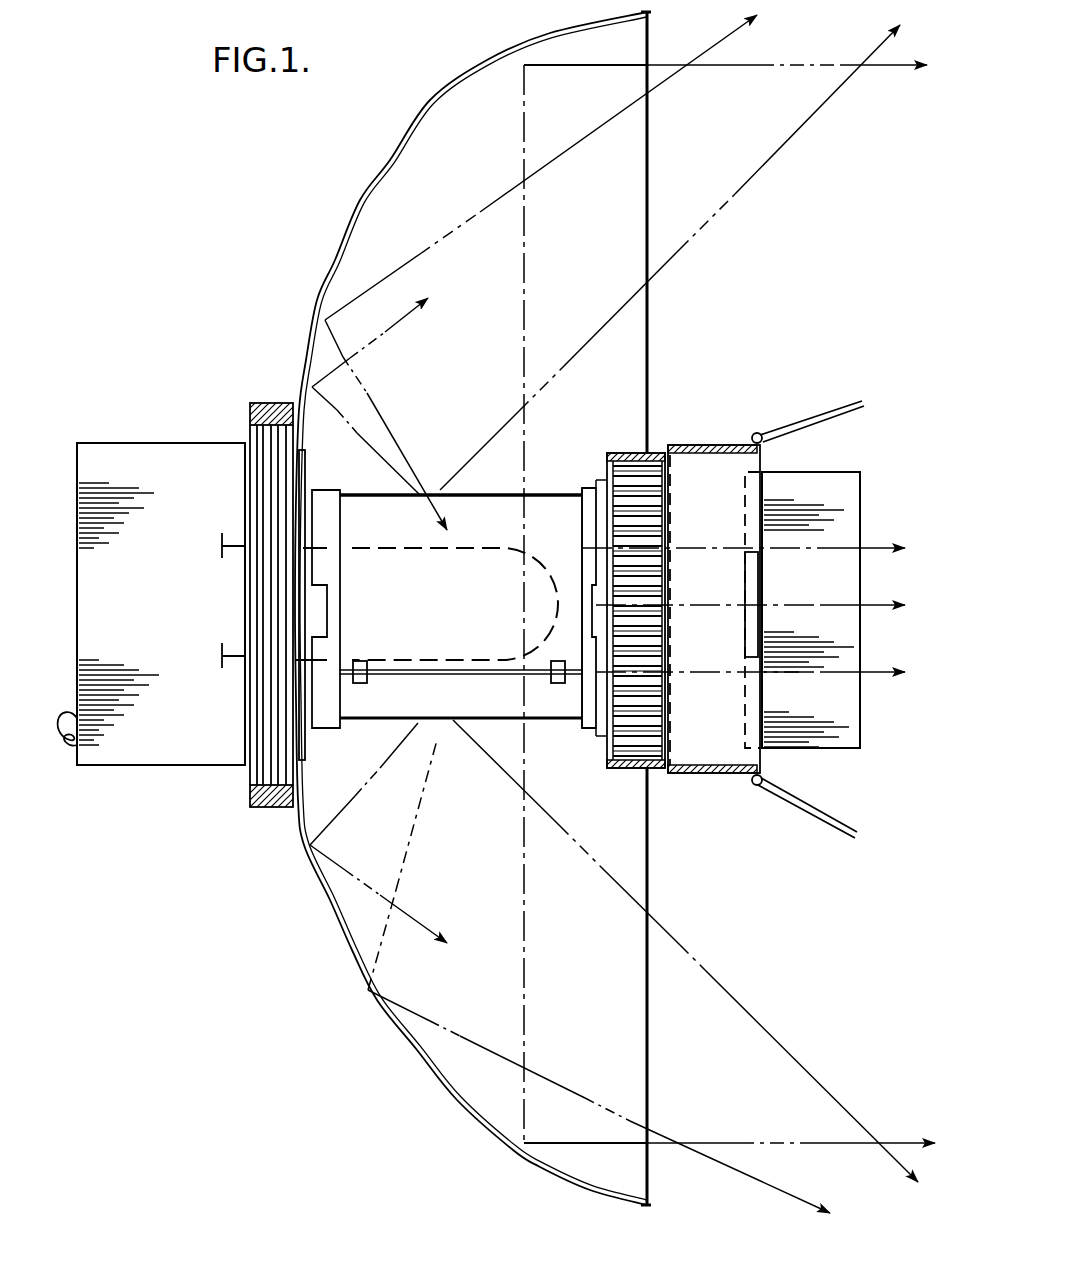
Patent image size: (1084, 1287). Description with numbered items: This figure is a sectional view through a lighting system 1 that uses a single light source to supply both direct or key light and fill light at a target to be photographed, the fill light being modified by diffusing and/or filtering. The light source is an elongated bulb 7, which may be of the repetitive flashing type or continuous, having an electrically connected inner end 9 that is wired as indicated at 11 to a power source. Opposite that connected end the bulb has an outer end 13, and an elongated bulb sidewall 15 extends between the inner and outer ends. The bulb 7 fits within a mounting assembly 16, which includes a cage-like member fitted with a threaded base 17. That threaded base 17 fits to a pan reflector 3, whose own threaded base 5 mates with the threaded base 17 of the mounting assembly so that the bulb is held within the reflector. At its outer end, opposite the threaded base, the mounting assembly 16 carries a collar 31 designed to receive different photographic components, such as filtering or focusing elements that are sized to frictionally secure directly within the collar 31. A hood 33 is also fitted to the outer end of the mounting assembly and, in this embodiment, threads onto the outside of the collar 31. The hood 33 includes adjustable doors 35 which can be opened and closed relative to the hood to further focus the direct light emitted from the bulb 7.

The lighting system 1 is at (334, 188).
The pan reflector 3 is at (486, 70).
The threaded base 5 is at (276, 405).
The elongated bulb 7 is at (486, 542).
The inner end 9 is at (238, 604).
The wiring 11 is at (66, 750).
The outer end 13 is at (562, 582).
The bulb sidewall 15 is at (402, 548).
The mounting assembly 16 is at (447, 740).
The threaded base 17 is at (264, 770).
The collar 31 is at (622, 448).
The hood 33 is at (714, 447).
The adjustable doors 35 is at (826, 408).